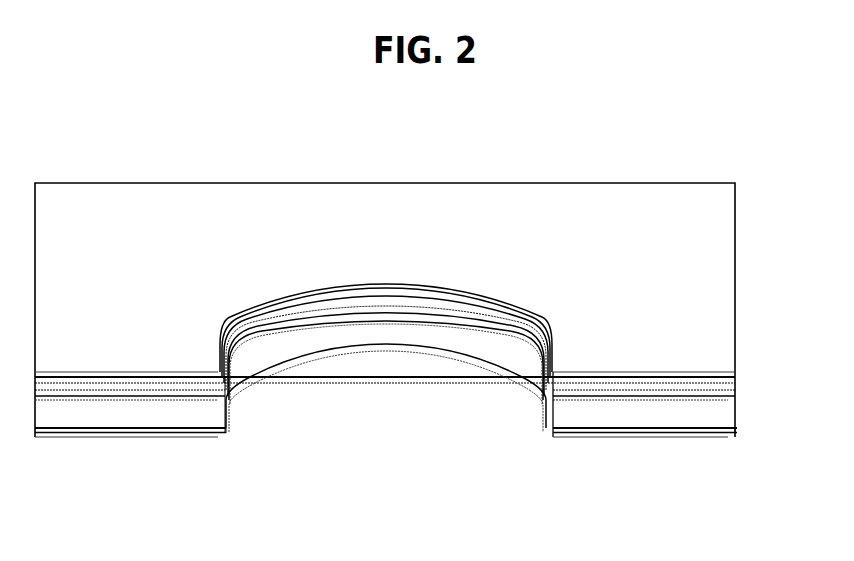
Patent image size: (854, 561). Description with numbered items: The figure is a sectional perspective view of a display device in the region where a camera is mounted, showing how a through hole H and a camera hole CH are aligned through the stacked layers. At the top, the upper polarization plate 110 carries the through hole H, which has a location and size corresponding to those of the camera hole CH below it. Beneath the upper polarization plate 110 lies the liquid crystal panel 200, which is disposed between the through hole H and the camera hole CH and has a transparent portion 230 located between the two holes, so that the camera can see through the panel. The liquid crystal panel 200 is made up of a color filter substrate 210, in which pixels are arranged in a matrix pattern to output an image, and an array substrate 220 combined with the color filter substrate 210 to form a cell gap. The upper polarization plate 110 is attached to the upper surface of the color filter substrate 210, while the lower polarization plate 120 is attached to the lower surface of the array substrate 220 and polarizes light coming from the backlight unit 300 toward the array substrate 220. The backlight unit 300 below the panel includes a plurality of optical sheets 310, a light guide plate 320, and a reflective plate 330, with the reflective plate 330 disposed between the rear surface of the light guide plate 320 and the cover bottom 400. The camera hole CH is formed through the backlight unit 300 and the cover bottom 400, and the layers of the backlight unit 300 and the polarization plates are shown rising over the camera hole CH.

The through hole H is at (510, 312).
The upper polarization plate 110 is at (725, 337).
The lower polarization plate 120 is at (553, 393).
The liquid crystal panel 200 is at (435, 348).
The color filter substrate 210 is at (730, 381).
The array substrate 220 is at (730, 390).
The transparent portion 230 is at (350, 365).
The camera hole CH is at (442, 397).
The backlight unit 300 is at (386, 461).
The optical sheets 310 is at (602, 400).
The light guide plate 320 is at (643, 415).
The reflective plate 330 is at (590, 479).
The cover bottom 400 is at (725, 433).